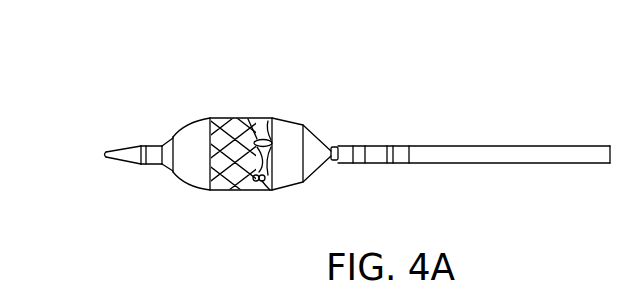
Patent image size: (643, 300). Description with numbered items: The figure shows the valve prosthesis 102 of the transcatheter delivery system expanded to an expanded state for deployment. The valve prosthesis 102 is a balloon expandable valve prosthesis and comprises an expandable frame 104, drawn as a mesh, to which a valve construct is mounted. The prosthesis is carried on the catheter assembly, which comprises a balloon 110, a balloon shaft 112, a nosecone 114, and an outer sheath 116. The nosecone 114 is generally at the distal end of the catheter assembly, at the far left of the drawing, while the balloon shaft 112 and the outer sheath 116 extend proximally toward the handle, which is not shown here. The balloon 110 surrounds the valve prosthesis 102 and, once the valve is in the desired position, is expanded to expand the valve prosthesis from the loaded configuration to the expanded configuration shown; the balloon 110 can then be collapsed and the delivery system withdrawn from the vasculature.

The valve prosthesis 102 is at (243, 108).
The expandable frame 104 is at (236, 193).
The balloon 110 is at (302, 112).
The balloon shaft 112 is at (334, 147).
The nosecone 114 is at (131, 166).
The outer sheath 116 is at (497, 146).